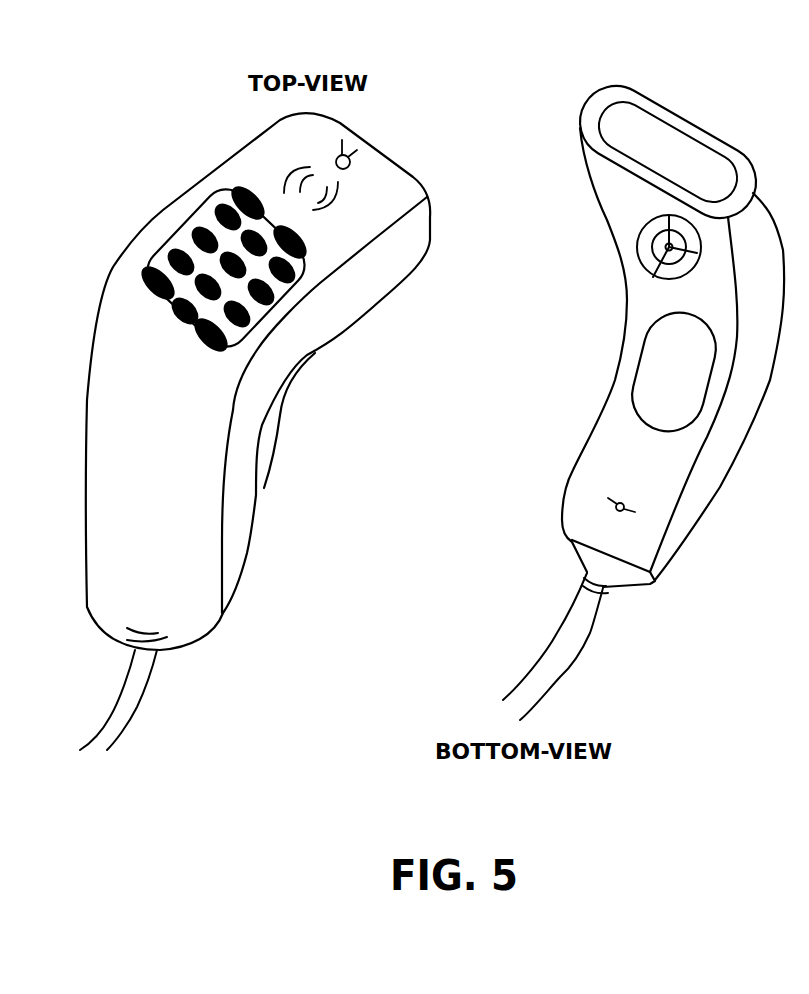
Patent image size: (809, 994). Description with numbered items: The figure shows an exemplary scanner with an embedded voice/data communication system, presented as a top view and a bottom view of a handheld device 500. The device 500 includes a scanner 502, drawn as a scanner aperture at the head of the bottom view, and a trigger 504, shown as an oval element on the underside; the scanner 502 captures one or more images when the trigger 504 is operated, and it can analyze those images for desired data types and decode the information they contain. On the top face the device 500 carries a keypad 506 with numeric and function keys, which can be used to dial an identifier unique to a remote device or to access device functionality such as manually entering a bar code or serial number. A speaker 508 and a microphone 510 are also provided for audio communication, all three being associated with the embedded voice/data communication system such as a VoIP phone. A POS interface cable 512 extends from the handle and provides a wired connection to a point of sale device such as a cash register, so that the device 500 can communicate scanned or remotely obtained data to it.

The device 500 is at (702, 63).
The scanner 502 is at (683, 137).
The trigger 504 is at (655, 320).
The keypad 506 is at (315, 265).
The speaker 508 is at (697, 252).
The microphone 510 is at (620, 503).
The POS interface cable 512 is at (143, 687).